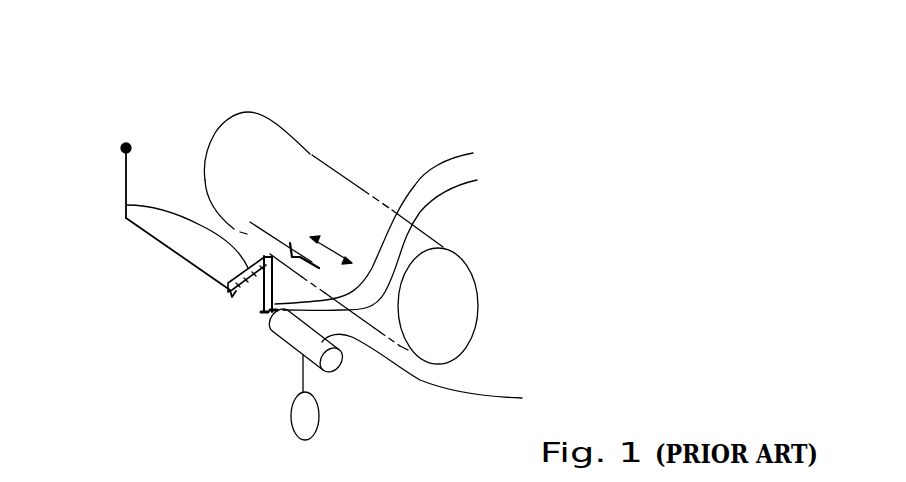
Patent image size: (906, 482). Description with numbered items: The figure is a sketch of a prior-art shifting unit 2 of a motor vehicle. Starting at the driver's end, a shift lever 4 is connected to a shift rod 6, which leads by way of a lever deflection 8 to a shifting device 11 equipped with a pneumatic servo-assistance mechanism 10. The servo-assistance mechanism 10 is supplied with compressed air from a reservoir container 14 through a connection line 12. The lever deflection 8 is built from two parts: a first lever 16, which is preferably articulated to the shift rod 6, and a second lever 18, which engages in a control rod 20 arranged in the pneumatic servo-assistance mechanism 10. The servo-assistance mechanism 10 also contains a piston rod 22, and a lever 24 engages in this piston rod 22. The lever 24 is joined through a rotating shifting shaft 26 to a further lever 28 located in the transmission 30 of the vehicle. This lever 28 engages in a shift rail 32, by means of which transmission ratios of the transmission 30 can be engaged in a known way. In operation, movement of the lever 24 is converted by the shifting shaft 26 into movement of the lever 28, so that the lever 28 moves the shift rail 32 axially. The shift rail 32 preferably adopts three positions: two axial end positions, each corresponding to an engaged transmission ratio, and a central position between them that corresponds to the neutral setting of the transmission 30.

The shifting unit 2 is at (242, 153).
The shift lever 4 is at (126, 185).
The shift rod 6 is at (183, 259).
The lever deflection 8 is at (127, 205).
The pneumatic servo-assistance mechanism 10 is at (505, 397).
The shifting device 11 is at (250, 247).
The connection line 12 is at (300, 378).
The reservoir container 14 is at (304, 412).
The first lever 16 is at (215, 279).
The second lever 18 is at (264, 280).
The control rod 20 is at (270, 310).
The piston rod 22 is at (477, 180).
The lever 24 is at (473, 153).
The shifting shaft 26 is at (297, 240).
The lever 28 is at (306, 232).
The transmission 30 is at (423, 255).
The shift rail 32 is at (292, 240).